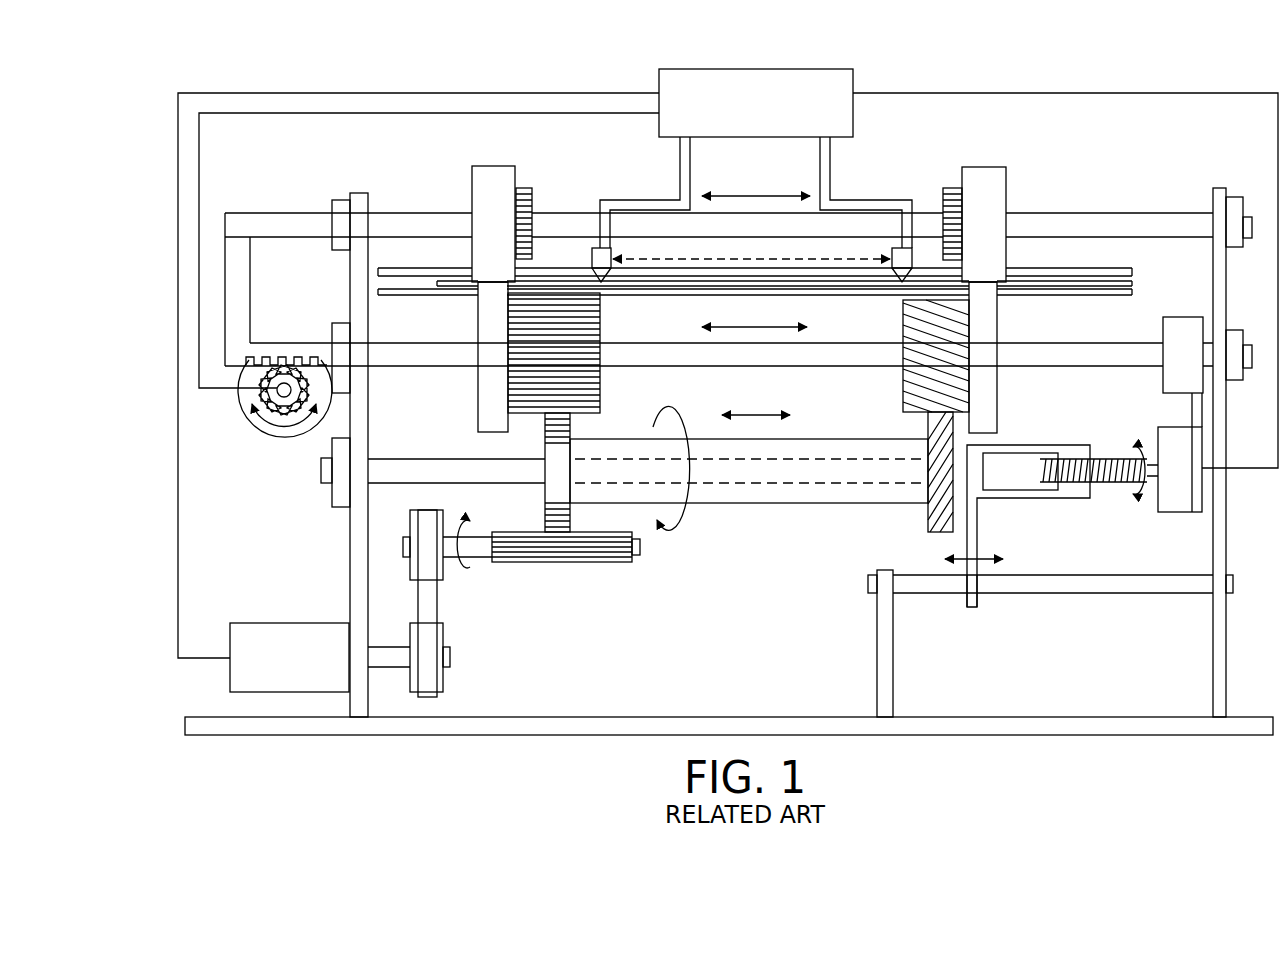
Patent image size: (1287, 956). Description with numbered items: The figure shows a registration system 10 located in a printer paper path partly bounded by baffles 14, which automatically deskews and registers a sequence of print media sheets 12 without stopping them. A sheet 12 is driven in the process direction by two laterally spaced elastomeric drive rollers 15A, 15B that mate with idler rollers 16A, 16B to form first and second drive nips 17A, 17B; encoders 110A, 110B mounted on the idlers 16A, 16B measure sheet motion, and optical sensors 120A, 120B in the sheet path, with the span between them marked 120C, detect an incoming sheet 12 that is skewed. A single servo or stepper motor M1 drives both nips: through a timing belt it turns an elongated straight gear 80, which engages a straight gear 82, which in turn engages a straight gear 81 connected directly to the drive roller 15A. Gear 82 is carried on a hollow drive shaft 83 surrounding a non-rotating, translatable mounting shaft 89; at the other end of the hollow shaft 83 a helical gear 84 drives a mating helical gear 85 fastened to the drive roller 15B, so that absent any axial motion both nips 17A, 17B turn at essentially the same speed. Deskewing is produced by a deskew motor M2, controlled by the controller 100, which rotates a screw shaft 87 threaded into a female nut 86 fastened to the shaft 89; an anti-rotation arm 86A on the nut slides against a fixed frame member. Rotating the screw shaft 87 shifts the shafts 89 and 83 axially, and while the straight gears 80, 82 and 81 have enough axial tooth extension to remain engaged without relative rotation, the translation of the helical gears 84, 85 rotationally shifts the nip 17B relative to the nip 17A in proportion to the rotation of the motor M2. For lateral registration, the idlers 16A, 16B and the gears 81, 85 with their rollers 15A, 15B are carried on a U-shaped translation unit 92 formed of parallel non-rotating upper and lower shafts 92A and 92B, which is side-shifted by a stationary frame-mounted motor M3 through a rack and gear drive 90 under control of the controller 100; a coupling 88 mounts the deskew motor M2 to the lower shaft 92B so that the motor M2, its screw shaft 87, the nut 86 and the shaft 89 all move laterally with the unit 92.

The registration system 10 is at (566, 87).
The controller 100 is at (795, 68).
The nips lateral translation unit 92 is at (237, 198).
The upper arm or shaft 92A is at (1140, 213).
The lower arm or shaft 92B is at (1125, 344).
The idler roller 16A is at (492, 178).
The idler roller 16B is at (985, 180).
The encoder 110A is at (524, 190).
The encoder 110B is at (947, 185).
The sheet drive roller 15A is at (483, 333).
The sheet drive roller 15B is at (990, 305).
The first drive nip 17A is at (490, 278).
The second drive nip 17B is at (988, 278).
The optical sensor 120A is at (600, 252).
The optical sensor 120B is at (898, 252).
The sensor spacing 120C is at (732, 255).
The print media sheet 12 is at (790, 282).
The baffles 14 is at (655, 288).
The straight gear 81 is at (548, 300).
The straight gear 82 is at (548, 517).
The elongated straight gear 80 is at (562, 556).
The hollow drive shaft 83 is at (803, 500).
The mounting shaft 89 is at (735, 487).
The helical gear 85 is at (910, 330).
The helical gear 84 is at (935, 520).
The female nut 86 is at (1068, 498).
The anti-rotation arm 86A is at (972, 610).
The screw shaft 87 is at (1118, 485).
The connector or coupling 88 is at (1193, 382).
The servo or stepper motor M1 is at (289, 657).
The deskew motor M2 is at (1180, 469).
The motor M3 is at (268, 427).
The rack and gear drive 90 is at (285, 358).